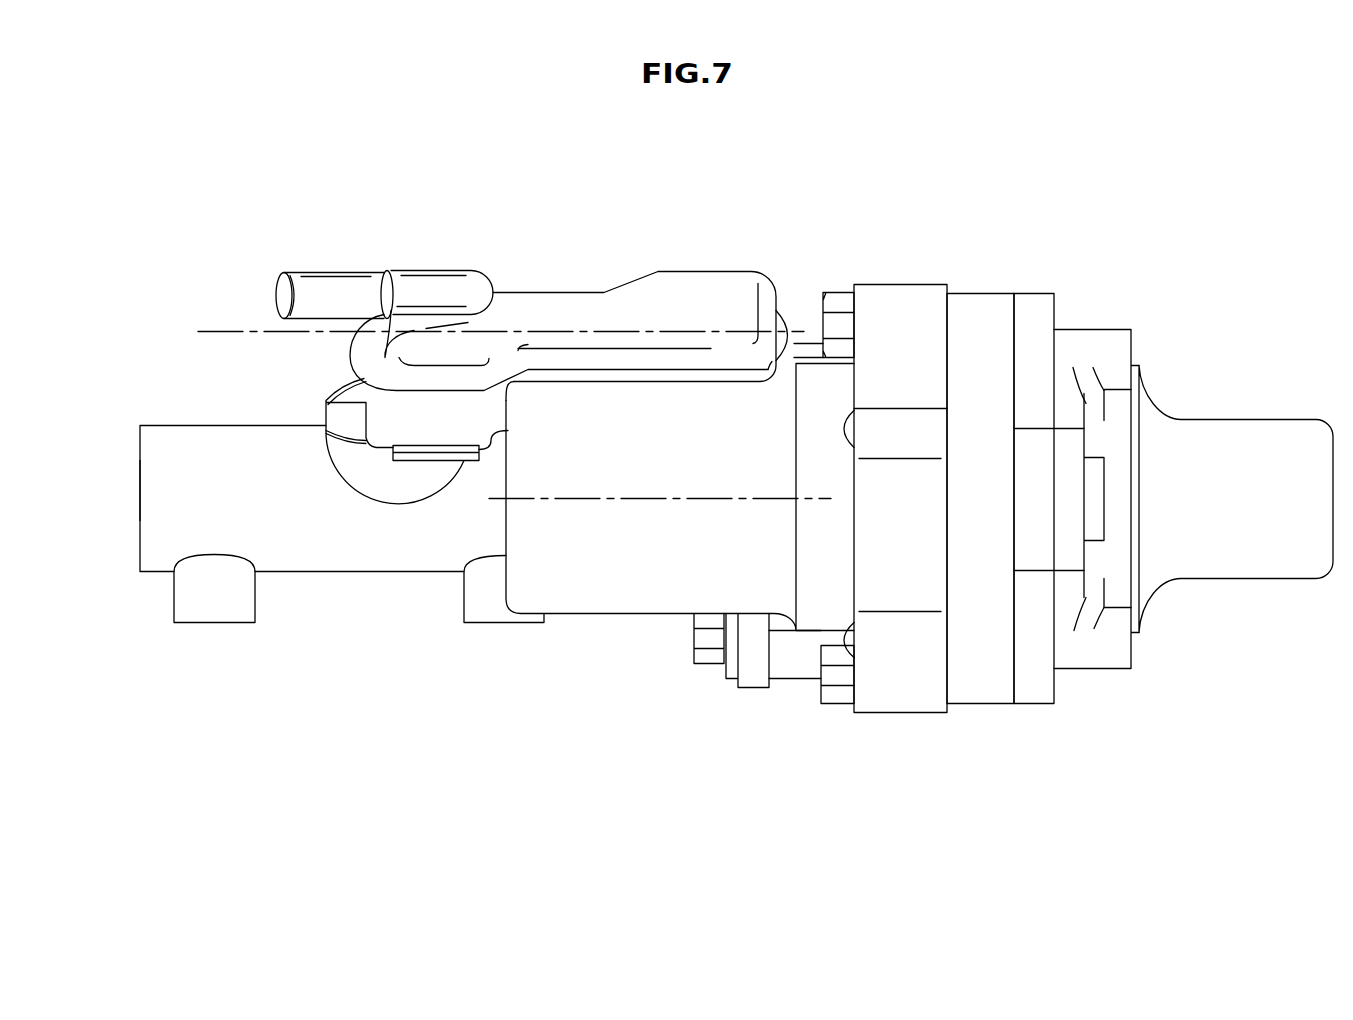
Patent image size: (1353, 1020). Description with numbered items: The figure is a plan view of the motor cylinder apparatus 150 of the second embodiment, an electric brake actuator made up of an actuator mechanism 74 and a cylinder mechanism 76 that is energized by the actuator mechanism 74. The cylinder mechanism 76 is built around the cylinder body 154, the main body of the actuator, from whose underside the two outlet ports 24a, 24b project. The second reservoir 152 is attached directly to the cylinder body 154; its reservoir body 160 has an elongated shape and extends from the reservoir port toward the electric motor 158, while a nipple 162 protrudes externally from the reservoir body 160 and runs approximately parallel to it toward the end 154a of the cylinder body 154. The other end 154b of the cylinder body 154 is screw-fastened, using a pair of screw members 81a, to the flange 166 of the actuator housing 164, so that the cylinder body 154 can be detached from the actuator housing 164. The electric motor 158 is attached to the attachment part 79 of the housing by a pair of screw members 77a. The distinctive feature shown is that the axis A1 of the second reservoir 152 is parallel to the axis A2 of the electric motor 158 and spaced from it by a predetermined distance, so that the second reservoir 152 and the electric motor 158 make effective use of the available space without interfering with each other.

The outlet port 24a is at (513, 622).
The outlet port 24b is at (213, 622).
The actuator mechanism 74 is at (1157, 395).
The cylinder mechanism 76 is at (295, 568).
The screw member 77a is at (803, 300).
The attachment part 79 is at (980, 293).
The screw member 81a is at (693, 638).
The motor cylinder apparatus 150 is at (1001, 433).
The second reservoir 152 is at (528, 285).
The cylinder body 154 is at (403, 552).
The end of the cylinder body 154a is at (139, 490).
The other end of the cylinder body 154b is at (748, 688).
The electric motor 158 is at (605, 622).
The reservoir body 160 is at (593, 298).
The nipple 162 is at (300, 275).
The actuator housing 164 is at (1043, 314).
The flange 166 is at (787, 680).
The axis of the second reservoir A1 is at (240, 333).
The axis of the electric motor A2 is at (713, 497).